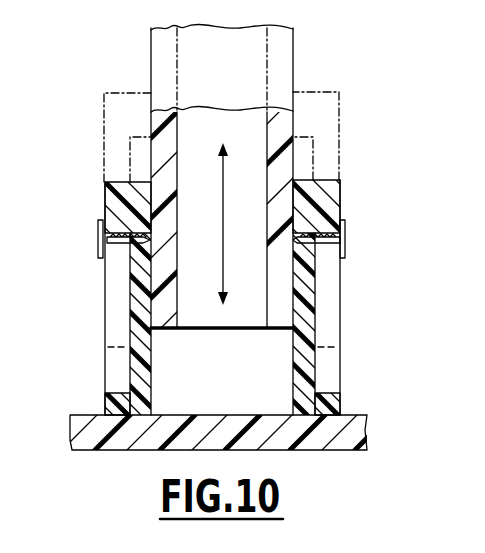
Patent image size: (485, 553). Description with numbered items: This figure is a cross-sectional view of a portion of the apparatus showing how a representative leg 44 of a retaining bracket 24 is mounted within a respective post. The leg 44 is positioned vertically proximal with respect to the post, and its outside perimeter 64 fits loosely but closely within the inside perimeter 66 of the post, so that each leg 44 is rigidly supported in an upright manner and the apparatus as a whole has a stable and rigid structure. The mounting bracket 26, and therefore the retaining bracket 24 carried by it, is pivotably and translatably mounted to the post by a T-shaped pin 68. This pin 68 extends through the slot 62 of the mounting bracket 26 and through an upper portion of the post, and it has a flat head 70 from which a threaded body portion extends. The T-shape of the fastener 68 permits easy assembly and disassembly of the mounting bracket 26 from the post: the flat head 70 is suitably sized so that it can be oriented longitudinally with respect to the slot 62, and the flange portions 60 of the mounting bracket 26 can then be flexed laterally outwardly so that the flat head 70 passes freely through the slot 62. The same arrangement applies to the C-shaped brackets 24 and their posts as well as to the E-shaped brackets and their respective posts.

The retaining bracket 24 is at (298, 53).
The mounting bracket 26 is at (341, 126).
The leg 44 is at (172, 268).
The flange portions 60 is at (106, 404).
The slot 62 is at (112, 295).
The outside perimeter 64 is at (296, 318).
The inside perimeter 66 is at (293, 390).
The T-shaped pin 68 is at (90, 246).
The flat head 70 is at (102, 220).